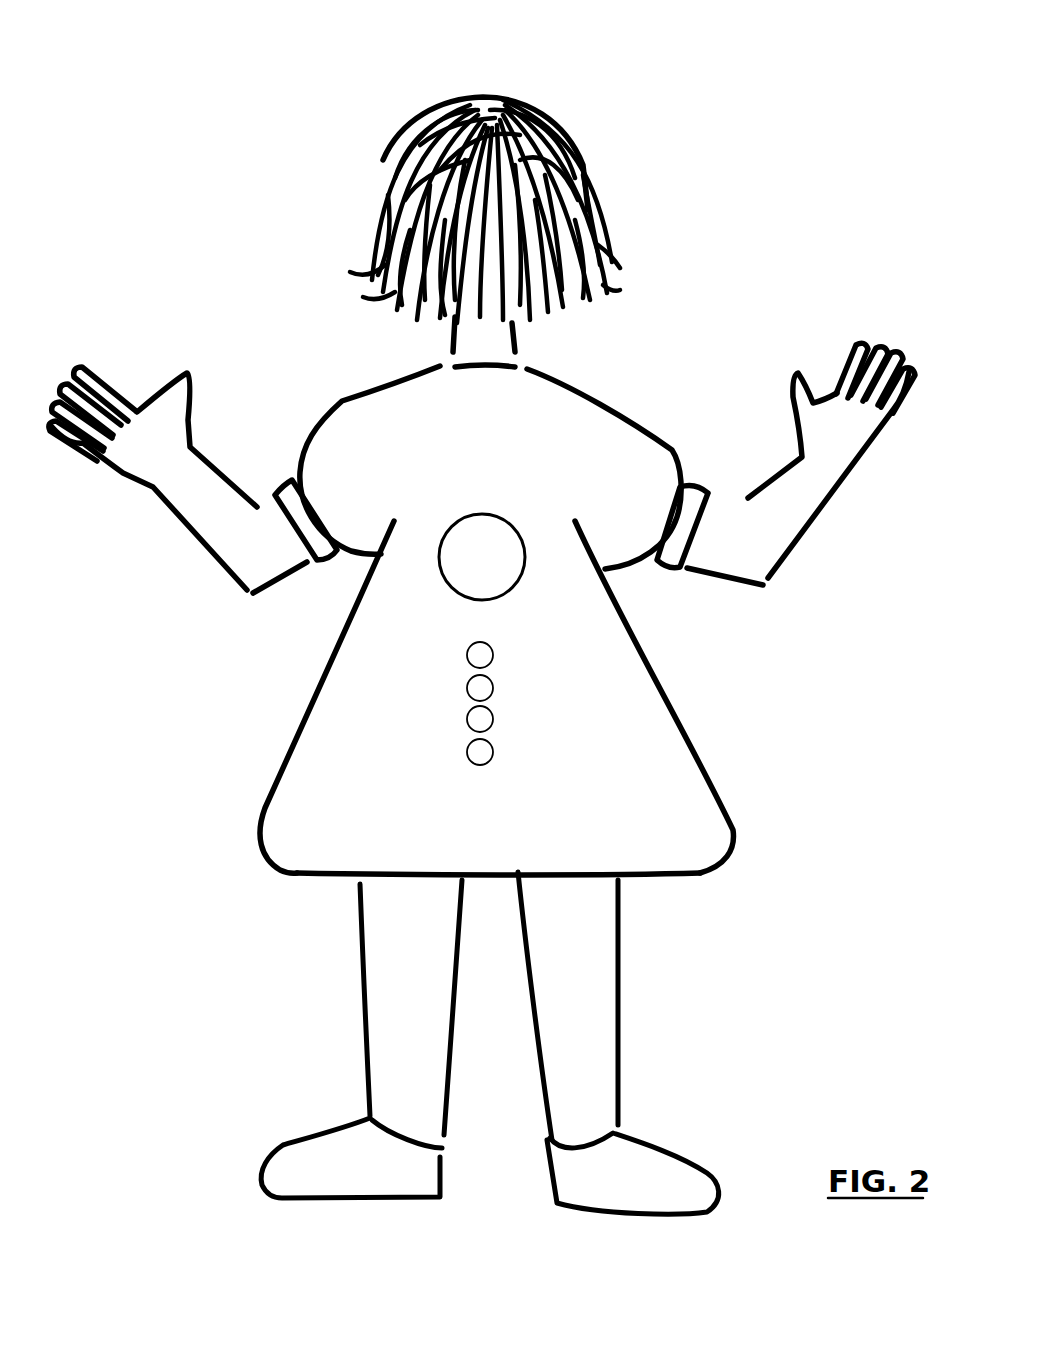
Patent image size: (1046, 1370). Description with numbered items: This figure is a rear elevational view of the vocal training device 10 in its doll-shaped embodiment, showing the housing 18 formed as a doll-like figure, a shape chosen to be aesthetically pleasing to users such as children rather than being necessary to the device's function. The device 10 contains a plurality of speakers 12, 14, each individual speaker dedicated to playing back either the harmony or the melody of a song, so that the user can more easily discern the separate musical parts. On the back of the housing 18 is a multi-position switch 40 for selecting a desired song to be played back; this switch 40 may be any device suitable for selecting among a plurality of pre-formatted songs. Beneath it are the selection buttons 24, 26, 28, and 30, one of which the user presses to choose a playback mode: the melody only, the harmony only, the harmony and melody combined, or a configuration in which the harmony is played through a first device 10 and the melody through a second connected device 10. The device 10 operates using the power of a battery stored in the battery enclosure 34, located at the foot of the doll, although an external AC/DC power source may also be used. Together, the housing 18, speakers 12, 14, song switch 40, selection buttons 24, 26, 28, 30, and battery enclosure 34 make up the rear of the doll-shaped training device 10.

The vocal training device 10 is at (532, 74).
The speaker 12 is at (582, 188).
The speaker 14 is at (392, 222).
The housing 18 is at (355, 390).
The selection button 24 is at (493, 657).
The selection button 26 is at (467, 688).
The selection button 28 is at (493, 720).
The selection button 30 is at (467, 752).
The battery enclosure 34 is at (580, 1212).
The multi-position switch 40 is at (498, 576).